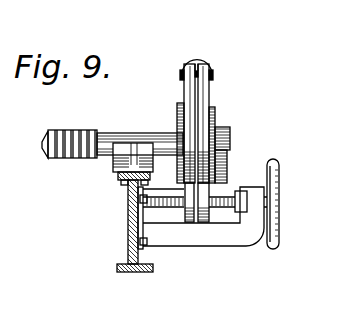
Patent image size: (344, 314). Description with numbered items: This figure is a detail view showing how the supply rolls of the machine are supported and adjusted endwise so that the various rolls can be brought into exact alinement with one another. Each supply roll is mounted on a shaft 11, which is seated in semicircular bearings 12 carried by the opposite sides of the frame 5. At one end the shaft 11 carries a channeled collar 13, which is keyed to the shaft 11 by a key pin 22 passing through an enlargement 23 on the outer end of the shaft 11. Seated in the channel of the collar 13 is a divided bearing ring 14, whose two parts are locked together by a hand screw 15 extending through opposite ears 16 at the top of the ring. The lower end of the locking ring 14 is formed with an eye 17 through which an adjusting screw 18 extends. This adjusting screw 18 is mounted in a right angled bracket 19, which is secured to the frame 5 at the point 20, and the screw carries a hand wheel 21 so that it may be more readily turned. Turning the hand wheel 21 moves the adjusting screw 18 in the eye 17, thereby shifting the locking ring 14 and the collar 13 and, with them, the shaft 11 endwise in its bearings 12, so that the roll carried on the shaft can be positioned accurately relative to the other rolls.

The frame 5 is at (117, 176).
The shaft 11 is at (130, 134).
The semicircular bearings 12 is at (110, 156).
The channeled collar 13 is at (215, 107).
The divided bearing ring 14 is at (187, 105).
The hand screw 15 is at (213, 74).
The ears 16 is at (213, 53).
The eye 17 is at (201, 223).
The adjusting screw 18 is at (165, 206).
The right angled bracket 19 is at (244, 249).
The securing means 20 is at (138, 246).
The hand wheel 21 is at (280, 172).
The key pin 22 is at (230, 133).
The enlargement 23 is at (227, 163).